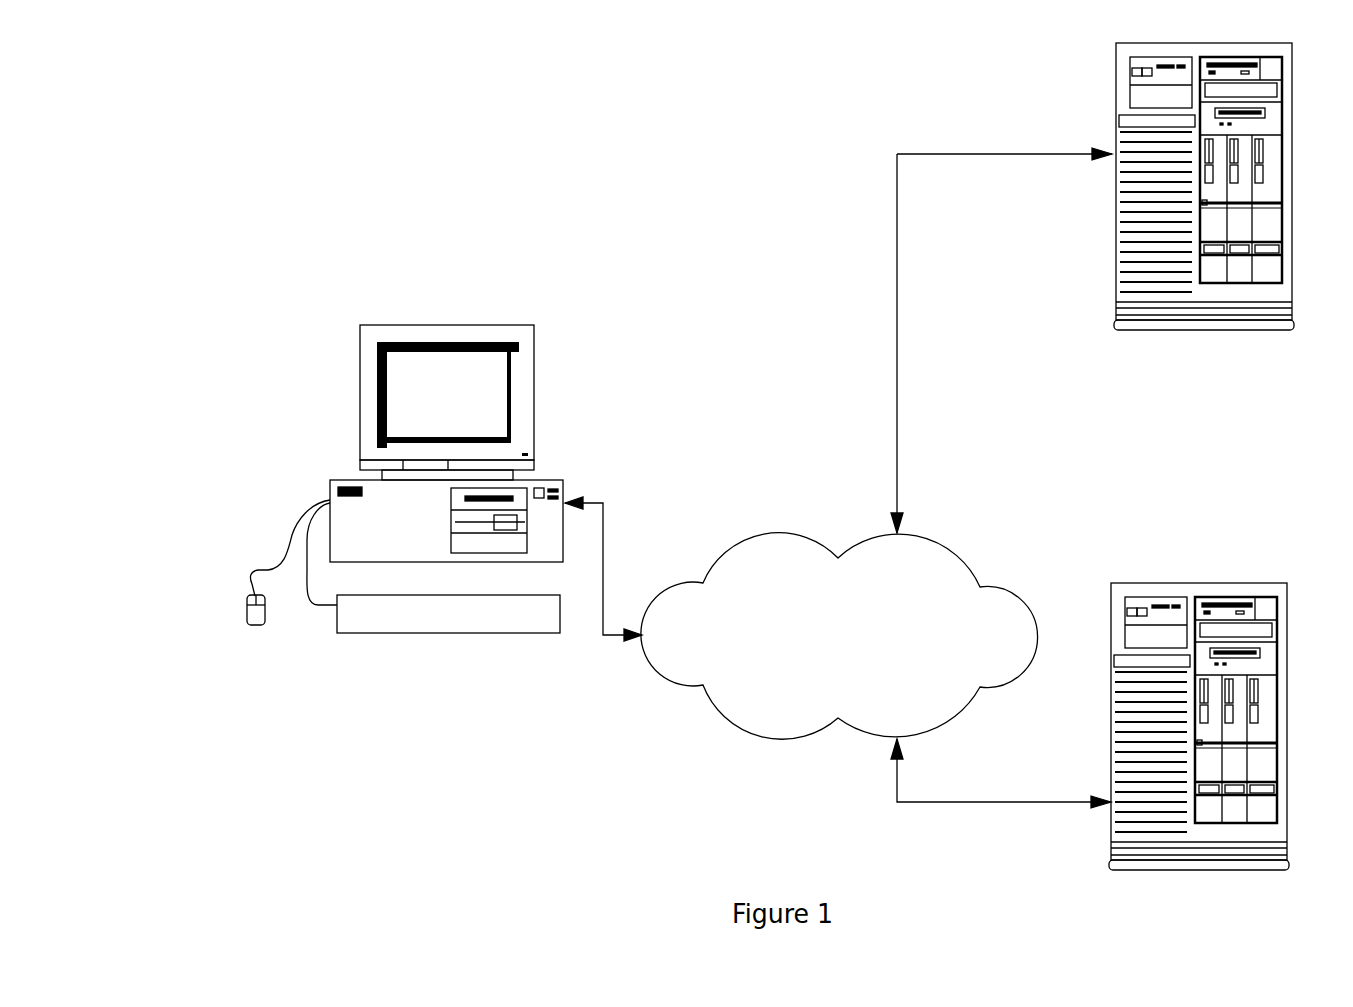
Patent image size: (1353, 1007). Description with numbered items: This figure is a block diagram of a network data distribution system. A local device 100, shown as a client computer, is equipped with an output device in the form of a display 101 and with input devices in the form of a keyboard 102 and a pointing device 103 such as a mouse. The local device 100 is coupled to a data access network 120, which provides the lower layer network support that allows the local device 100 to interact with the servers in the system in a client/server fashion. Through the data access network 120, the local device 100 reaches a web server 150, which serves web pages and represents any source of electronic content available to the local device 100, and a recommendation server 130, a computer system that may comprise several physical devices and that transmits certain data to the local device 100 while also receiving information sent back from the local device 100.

The local device 100 is at (358, 477).
The display 101 is at (360, 363).
The keyboard 102 is at (334, 625).
The pointing device 103 is at (246, 601).
The data access network 120 is at (839, 636).
The recommendation server 130 is at (1196, 762).
The web server 150 is at (1206, 215).